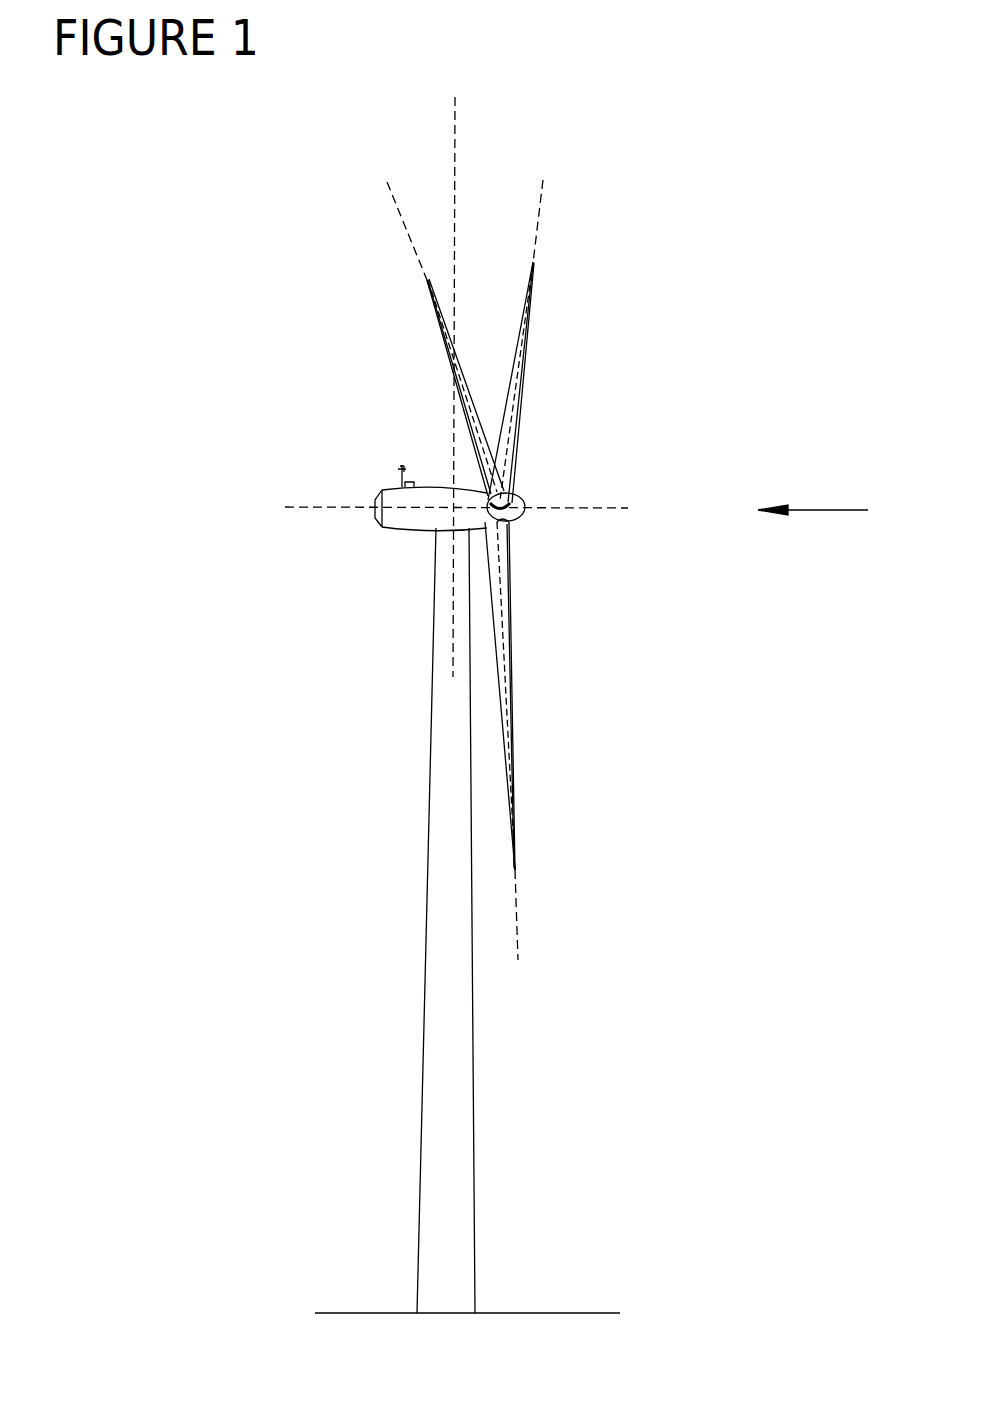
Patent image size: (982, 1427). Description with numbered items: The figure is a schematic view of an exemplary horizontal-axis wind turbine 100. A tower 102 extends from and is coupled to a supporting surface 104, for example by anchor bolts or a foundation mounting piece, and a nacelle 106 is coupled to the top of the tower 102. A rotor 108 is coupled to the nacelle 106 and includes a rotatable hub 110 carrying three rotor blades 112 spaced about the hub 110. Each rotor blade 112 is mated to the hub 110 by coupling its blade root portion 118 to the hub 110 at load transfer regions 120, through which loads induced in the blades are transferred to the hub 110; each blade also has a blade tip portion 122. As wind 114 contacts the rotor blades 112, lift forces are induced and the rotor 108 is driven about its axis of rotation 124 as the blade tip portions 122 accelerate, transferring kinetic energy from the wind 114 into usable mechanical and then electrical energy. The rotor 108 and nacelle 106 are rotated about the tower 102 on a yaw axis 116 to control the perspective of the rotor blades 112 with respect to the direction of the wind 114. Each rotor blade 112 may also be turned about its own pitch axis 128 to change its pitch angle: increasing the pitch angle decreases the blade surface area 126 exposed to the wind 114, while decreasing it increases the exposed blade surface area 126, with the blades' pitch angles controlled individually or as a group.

The wind turbine 100 is at (210, 290).
The tower 102 is at (422, 1082).
The supporting surface 104 is at (375, 1313).
The nacelle 106 is at (407, 528).
The rotor 108 is at (532, 410).
The rotatable hub 110 is at (523, 502).
The rotor blades 112 is at (440, 354).
The wind 114 is at (831, 510).
The yaw axis 116 is at (457, 122).
The blade root portion 118 is at (512, 585).
The load transfer regions 120 is at (507, 497).
The blade tip portion 122 is at (429, 288).
The axis of rotation 124 is at (590, 508).
The blade surface area 126 is at (513, 452).
The pitch axis 128 is at (390, 198).